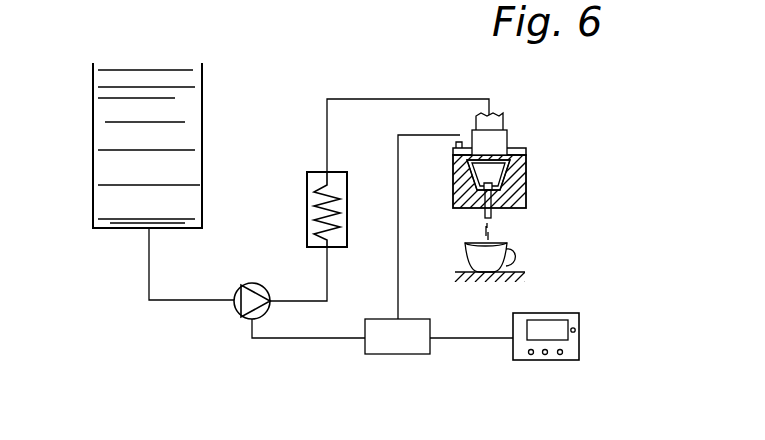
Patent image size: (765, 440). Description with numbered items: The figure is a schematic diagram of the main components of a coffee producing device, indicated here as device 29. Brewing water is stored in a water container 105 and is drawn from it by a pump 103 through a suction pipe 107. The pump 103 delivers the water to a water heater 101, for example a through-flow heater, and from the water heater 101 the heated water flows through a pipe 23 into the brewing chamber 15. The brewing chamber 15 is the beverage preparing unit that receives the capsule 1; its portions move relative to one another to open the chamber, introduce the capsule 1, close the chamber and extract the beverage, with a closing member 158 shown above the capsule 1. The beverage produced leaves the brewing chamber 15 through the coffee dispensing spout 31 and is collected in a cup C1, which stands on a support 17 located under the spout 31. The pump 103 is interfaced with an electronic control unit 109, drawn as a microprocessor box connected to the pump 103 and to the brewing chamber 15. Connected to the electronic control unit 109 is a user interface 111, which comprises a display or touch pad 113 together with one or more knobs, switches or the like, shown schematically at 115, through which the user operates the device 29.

The beverage preparation machine 29 is at (32, 9).
The water container 105 is at (93, 138).
The suction pipe 107 is at (149, 266).
The pump 103 is at (238, 316).
The water heater 101 is at (304, 190).
The pipe 23 is at (400, 102).
The electronic control unit 109 is at (383, 354).
The brewing chamber 15 is at (532, 190).
The capsule 1 is at (456, 172).
The capsule holder / closing member 158 is at (497, 140).
The coffee dispensing spout 31 is at (483, 212).
The cup C1 is at (497, 252).
The cup support 17 is at (522, 272).
The user interface 111 is at (522, 358).
The display or touch pad 113 is at (551, 327).
The knobs or switches 115 is at (562, 352).